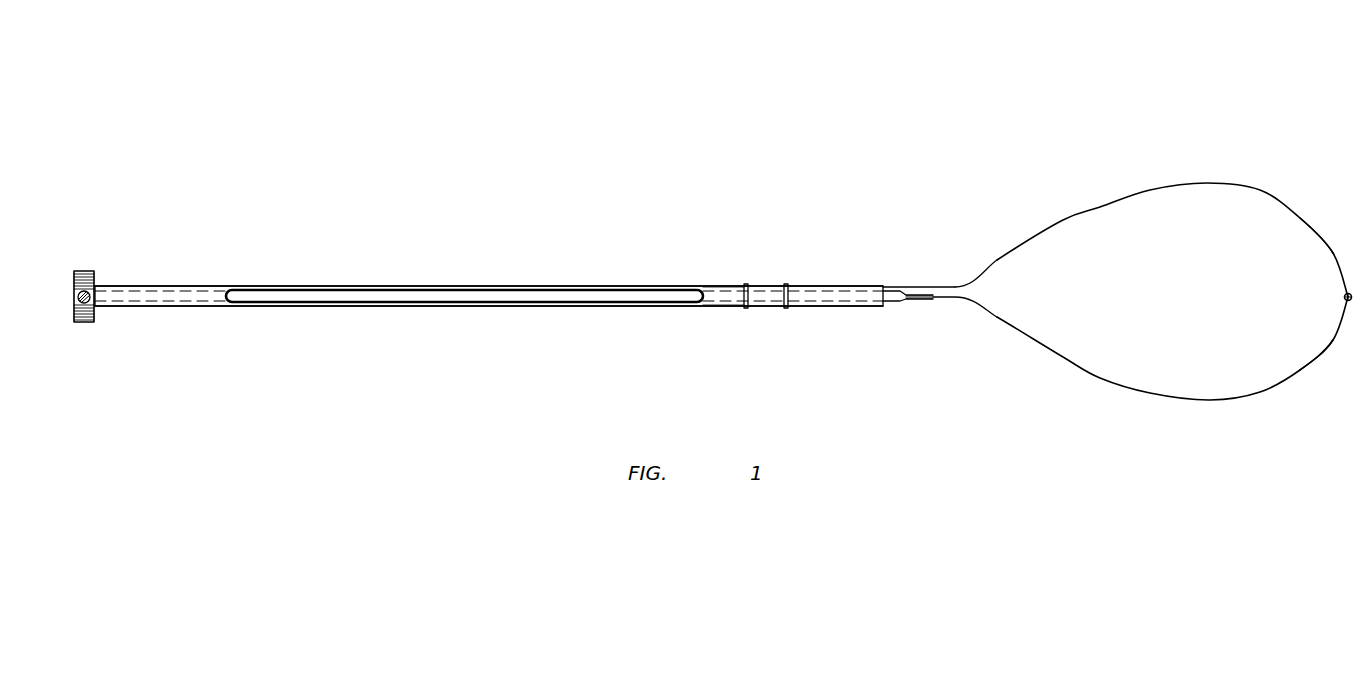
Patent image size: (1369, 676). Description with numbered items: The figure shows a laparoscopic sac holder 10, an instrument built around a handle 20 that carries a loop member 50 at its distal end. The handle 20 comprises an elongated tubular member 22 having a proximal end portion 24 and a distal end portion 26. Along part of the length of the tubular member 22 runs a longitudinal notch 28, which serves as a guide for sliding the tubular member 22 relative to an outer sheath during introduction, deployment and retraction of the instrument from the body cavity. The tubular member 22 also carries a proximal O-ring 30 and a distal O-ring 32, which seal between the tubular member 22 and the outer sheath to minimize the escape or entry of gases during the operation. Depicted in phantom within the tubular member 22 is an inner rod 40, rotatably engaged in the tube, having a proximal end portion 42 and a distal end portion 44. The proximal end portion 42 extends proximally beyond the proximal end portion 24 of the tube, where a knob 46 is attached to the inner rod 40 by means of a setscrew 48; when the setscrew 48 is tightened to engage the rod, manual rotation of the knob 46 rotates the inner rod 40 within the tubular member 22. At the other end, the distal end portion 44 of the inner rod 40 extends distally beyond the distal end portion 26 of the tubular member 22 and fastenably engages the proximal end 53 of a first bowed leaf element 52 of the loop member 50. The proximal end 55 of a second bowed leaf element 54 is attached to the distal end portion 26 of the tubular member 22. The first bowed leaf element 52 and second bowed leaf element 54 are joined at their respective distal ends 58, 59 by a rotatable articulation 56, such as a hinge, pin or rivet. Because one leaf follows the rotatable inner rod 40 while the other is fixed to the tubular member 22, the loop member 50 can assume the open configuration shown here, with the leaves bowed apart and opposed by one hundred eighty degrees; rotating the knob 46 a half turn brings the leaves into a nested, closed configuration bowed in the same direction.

The laparoscopic sac holder 10 is at (603, 223).
The handle 20 is at (442, 343).
The tubular member 22 is at (626, 307).
The proximal end portion 24 is at (140, 307).
The distal end portion 26 is at (857, 307).
The notch 28 is at (277, 297).
The proximal O-ring 30 is at (746, 308).
The distal O-ring 32 is at (786, 308).
The inner rod 40 is at (719, 296).
The proximal end portion 42 is at (120, 295).
The distal end portion 44 is at (904, 299).
The knob 46 is at (85, 271).
The setscrew 48 is at (93, 299).
The loop member 50 is at (1118, 310).
The first bowed leaf element 52 is at (1100, 380).
The proximal end 53 is at (982, 305).
The second bowed leaf element 54 is at (1200, 182).
The proximal end 55 is at (911, 286).
The rotatable articulation 56 is at (1350, 303).
The distal end 58 is at (1333, 333).
The distal end 59 is at (1340, 262).